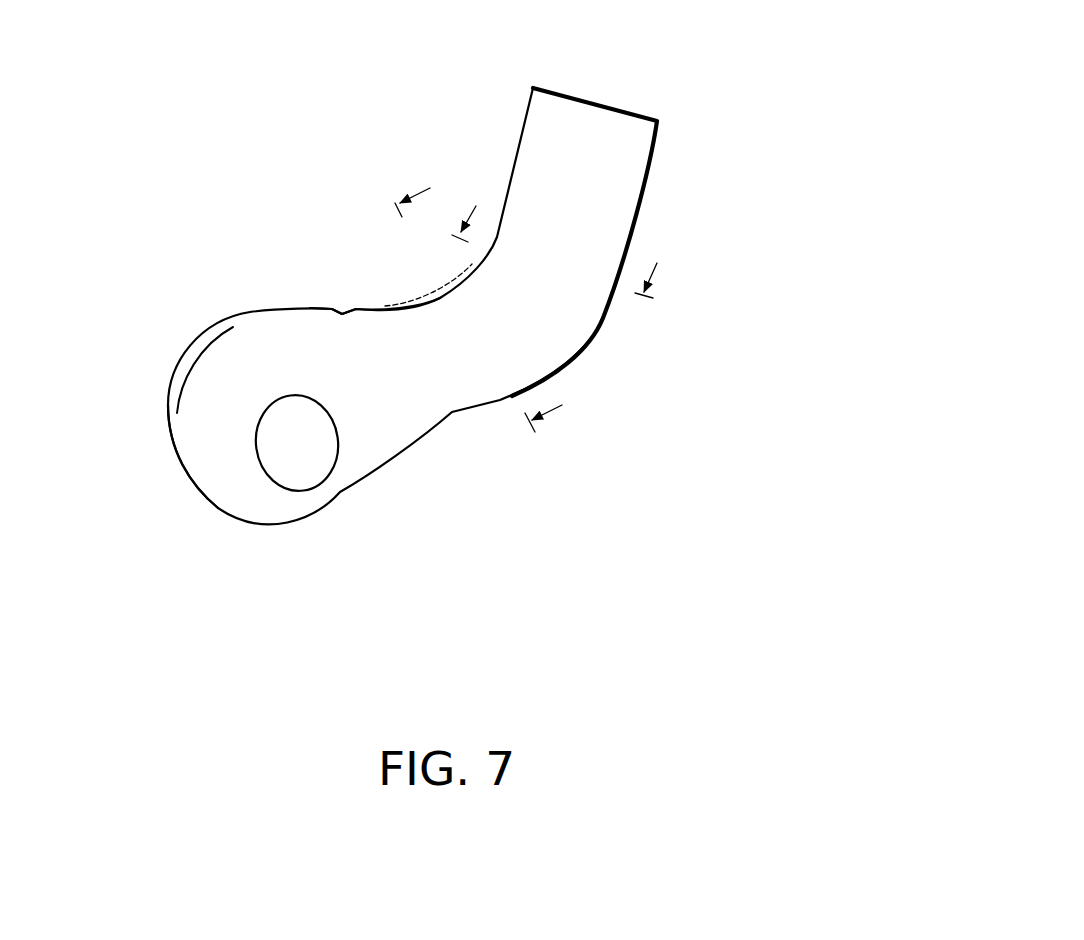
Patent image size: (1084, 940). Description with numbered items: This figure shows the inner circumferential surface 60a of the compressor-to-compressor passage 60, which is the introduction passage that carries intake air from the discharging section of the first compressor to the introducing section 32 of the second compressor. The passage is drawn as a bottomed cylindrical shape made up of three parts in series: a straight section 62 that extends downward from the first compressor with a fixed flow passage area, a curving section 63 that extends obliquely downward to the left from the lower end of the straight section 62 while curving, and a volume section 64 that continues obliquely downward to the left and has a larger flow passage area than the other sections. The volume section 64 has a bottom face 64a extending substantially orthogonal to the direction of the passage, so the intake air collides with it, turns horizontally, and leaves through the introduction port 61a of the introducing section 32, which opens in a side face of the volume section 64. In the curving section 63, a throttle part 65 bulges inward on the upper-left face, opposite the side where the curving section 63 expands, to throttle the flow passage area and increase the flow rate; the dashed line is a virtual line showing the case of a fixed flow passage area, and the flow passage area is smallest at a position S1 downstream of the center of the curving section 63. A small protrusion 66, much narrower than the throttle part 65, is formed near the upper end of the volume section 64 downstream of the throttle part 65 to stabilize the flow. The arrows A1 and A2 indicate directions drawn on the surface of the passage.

The compressor-to-compressor passage 60 is at (491, 275).
The inner circumferential surface 60a is at (412, 306).
The introduction port 61a is at (278, 527).
The introducing section 32 is at (306, 488).
The straight section 62 is at (600, 237).
The curving section 63 is at (580, 308).
The volume section 64 is at (233, 365).
The bottom face 64a is at (188, 465).
The throttle part 65 is at (410, 300).
The protrusion 66 is at (337, 308).
The reference surface S1 is at (428, 306).
The first direction A1 is at (419, 189).
The second direction A2 is at (471, 212).